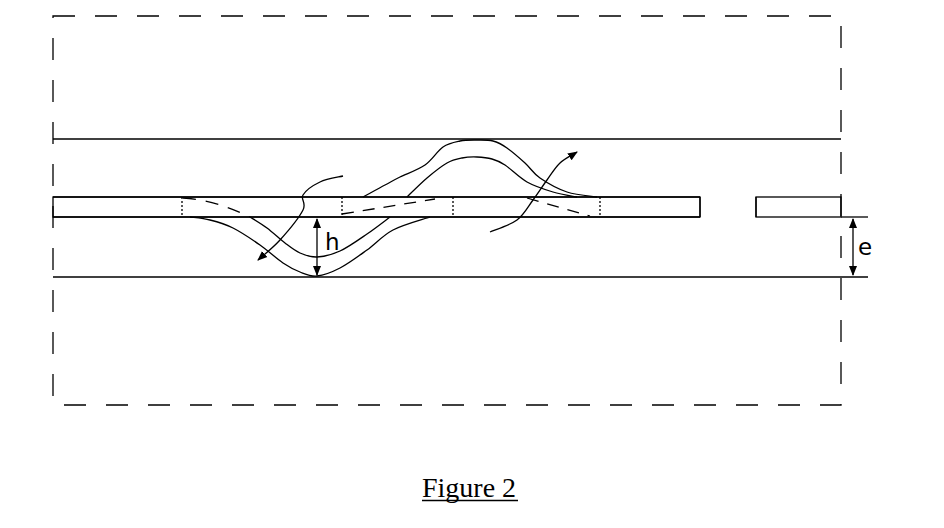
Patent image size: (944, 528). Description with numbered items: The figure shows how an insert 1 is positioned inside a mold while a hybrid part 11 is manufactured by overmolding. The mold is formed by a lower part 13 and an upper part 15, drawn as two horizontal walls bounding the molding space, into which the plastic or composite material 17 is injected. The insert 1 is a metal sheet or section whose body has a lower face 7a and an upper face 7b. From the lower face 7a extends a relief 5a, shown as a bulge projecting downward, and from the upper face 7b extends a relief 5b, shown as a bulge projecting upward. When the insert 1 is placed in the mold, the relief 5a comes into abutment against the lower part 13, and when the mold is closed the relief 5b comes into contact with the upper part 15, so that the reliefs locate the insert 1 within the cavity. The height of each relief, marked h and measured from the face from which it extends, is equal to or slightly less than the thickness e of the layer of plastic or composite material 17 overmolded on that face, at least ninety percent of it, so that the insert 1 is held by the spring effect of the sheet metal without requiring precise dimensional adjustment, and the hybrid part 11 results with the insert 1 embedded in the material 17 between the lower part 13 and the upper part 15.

The insert 1 is at (793, 207).
The lower relief 5a is at (367, 243).
The upper relief 5b is at (567, 192).
The lower face 7a is at (158, 218).
The upper face 7b is at (157, 197).
The hybrid part 11 is at (73, 172).
The lower part of the mold 13 is at (668, 356).
The upper part of the mold 15 is at (728, 80).
The plastic or composite material 17 is at (813, 174).